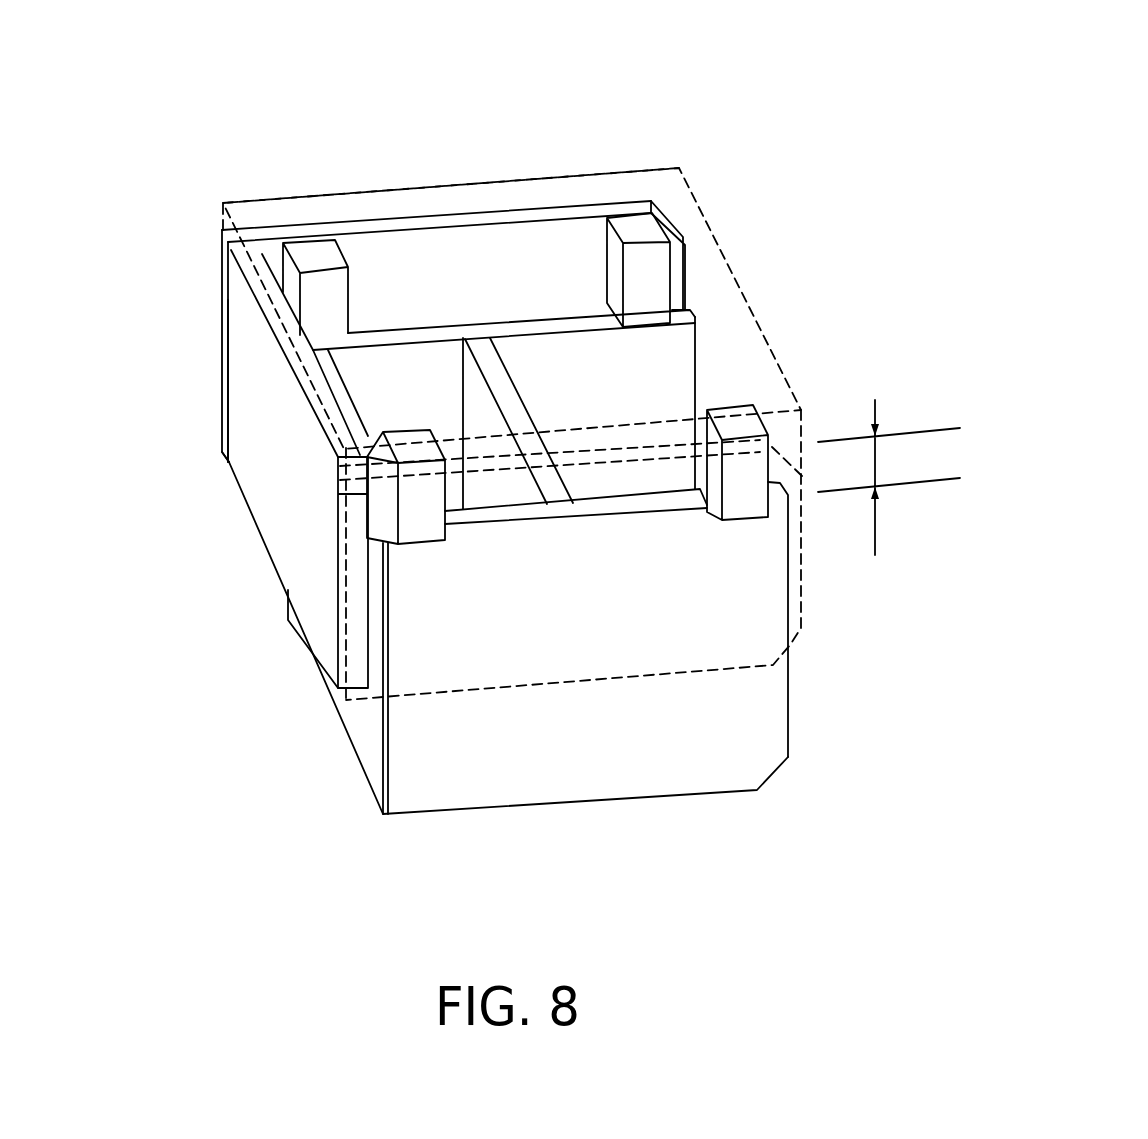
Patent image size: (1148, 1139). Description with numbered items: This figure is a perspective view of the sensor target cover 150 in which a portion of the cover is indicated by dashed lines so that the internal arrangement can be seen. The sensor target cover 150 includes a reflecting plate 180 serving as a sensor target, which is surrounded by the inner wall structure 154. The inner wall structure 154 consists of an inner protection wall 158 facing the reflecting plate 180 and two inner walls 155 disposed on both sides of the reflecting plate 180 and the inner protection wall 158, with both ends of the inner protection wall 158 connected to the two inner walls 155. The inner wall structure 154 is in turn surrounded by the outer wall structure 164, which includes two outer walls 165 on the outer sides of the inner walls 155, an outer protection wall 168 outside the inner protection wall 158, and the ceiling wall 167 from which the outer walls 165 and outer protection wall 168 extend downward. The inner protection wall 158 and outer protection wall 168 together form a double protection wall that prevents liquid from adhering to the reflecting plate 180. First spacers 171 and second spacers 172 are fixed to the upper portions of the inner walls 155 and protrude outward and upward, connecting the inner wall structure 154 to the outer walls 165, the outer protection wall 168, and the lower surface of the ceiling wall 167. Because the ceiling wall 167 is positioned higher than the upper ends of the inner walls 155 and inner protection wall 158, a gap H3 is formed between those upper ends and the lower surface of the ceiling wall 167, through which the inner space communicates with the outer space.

The sensor target cover 150 is at (733, 129).
The inner wall structure 154 is at (355, 787).
The inner wall 155 is at (698, 353).
The inner protection wall 158 is at (370, 722).
The outer wall structure 164 is at (185, 214).
The outer wall 165 is at (545, 208).
The ceiling wall 167 is at (458, 185).
The outer protection wall 168 is at (270, 497).
The first spacer 171 is at (638, 227).
The second spacer 172 is at (317, 250).
The reflecting plate 180 is at (522, 398).
The gap H3 is at (889, 477).